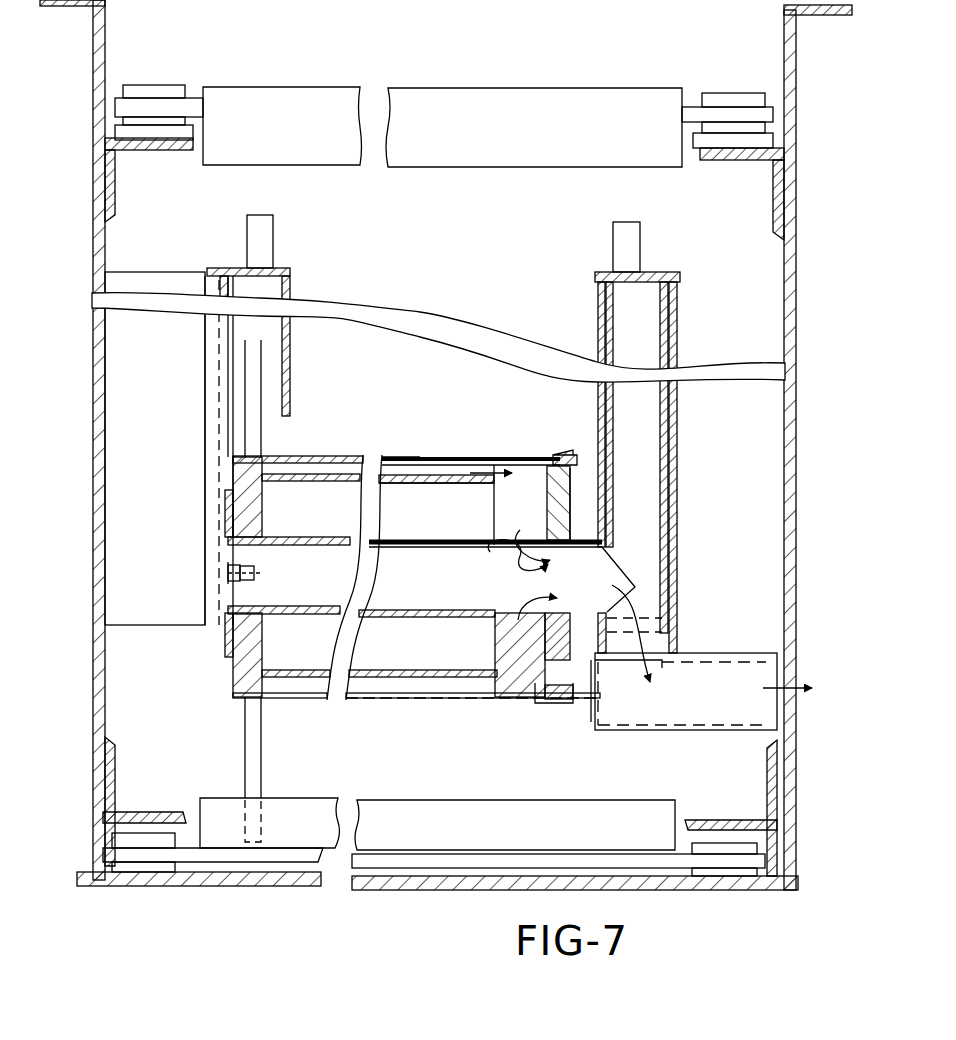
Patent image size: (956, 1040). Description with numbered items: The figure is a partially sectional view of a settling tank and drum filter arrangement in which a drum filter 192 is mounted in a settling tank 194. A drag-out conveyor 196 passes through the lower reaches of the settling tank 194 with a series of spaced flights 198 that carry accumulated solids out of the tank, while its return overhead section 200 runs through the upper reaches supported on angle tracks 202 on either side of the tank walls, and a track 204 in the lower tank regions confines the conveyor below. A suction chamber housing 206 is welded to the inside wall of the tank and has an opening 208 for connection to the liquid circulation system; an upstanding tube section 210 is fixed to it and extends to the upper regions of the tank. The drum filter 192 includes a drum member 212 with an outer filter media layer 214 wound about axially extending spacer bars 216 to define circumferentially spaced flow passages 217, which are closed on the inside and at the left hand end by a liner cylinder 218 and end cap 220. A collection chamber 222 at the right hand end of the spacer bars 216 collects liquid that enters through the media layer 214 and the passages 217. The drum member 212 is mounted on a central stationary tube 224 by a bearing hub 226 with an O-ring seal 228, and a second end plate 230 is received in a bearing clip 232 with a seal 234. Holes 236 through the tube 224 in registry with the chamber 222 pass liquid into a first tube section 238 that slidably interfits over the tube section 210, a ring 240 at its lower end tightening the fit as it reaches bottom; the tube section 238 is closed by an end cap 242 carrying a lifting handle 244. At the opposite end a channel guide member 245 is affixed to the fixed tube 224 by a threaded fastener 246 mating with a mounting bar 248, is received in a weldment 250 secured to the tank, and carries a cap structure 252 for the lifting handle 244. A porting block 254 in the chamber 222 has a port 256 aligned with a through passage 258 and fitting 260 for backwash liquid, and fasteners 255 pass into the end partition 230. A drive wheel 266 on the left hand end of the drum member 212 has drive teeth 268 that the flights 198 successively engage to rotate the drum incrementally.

The drum filter 192 is at (484, 383).
The settling tank 194 is at (791, 299).
The drag-out conveyor 196 is at (629, 802).
The flights 198 is at (430, 808).
The return overhead section 200 is at (502, 86).
The angle tracks 202 is at (134, 152).
The track 204 is at (176, 790).
The suction chamber housing 206 is at (744, 653).
The opening 208 is at (797, 668).
The tube section 210 is at (666, 328).
The drum member 212 is at (352, 418).
The filter media layer 214 is at (410, 458).
The spacer bars 216 is at (421, 484).
The flow passages 217 is at (361, 690).
The liner cylinder 218 is at (334, 481).
The end cap 220 is at (245, 478).
The collection chamber 222 is at (544, 508).
The central stationary tube 224 is at (401, 618).
The bearing hub 226 is at (287, 536).
The O-ring seal 228 is at (245, 531).
The second end plate 230 is at (571, 500).
The bearing clip 232 is at (577, 456).
The seal 234 is at (505, 473).
The holes 236 is at (496, 546).
The first tube section 238 is at (681, 488).
The ring 240 is at (673, 624).
The end cap 242 is at (655, 272).
The lifting handle 244 is at (613, 250).
The channel guide member 245 is at (197, 640).
The threaded fastener 246 is at (228, 577).
The mounting bar 248 is at (256, 574).
The weldment 250 is at (178, 271).
The cap structure 252 is at (293, 278).
The porting block 254 is at (506, 700).
The fasteners 255 is at (496, 655).
The port 256 is at (531, 703).
The through passage 258 is at (571, 704).
The fitting 260 is at (573, 660).
The drive wheel 266 is at (262, 731).
The drive teeth 268 is at (258, 826).